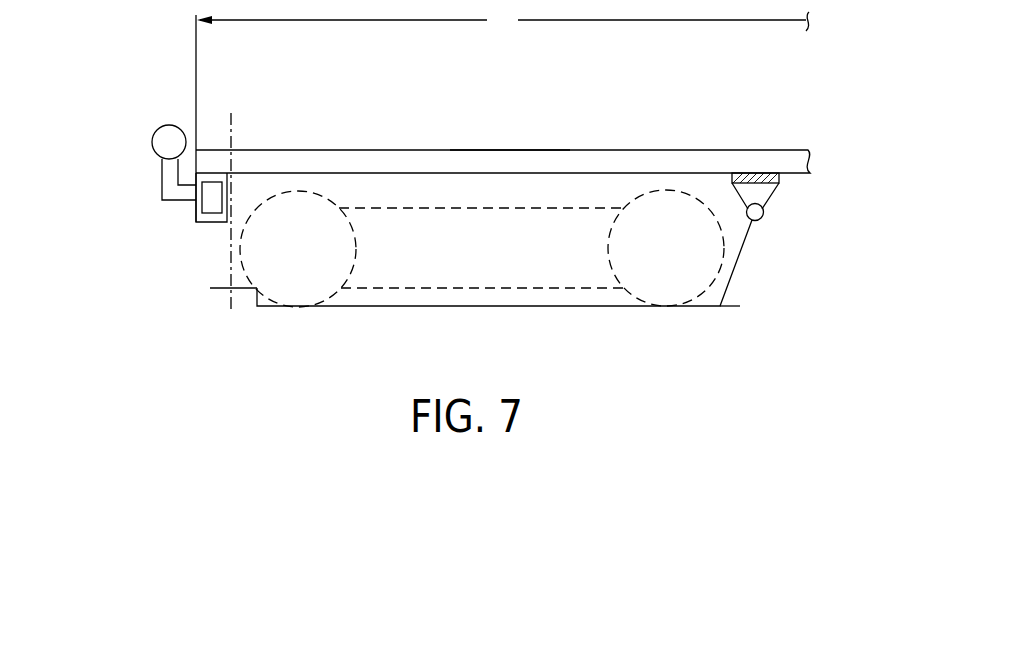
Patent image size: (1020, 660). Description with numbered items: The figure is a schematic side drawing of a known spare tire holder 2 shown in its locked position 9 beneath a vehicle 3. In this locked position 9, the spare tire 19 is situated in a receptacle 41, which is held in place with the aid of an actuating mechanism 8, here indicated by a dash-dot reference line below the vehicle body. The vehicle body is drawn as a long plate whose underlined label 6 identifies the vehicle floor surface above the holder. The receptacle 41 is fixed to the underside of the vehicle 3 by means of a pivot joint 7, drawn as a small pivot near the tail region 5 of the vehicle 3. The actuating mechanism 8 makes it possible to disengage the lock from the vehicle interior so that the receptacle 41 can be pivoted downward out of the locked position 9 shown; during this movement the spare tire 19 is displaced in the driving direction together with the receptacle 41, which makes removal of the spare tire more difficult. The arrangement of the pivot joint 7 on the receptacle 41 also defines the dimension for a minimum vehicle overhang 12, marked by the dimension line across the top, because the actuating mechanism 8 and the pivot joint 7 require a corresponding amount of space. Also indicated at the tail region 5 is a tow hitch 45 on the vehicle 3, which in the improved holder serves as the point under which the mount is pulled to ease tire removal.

The spare tire holder 2 is at (828, 215).
The vehicle 3 is at (681, 133).
The tail region 5 is at (127, 145).
The bed surface 6 is at (500, 124).
The pivot joint 7 is at (759, 219).
The actuating mechanism 8 is at (248, 138).
The locked position 9 is at (192, 255).
The minimum vehicle overhang 12 is at (502, 78).
The spare tire 19 is at (435, 268).
The receptacle 41 is at (535, 307).
The tow hitch 45 is at (169, 127).